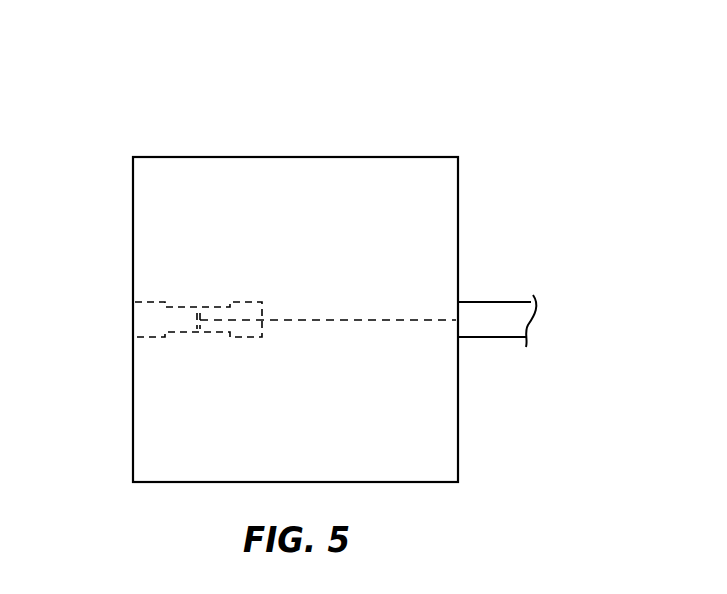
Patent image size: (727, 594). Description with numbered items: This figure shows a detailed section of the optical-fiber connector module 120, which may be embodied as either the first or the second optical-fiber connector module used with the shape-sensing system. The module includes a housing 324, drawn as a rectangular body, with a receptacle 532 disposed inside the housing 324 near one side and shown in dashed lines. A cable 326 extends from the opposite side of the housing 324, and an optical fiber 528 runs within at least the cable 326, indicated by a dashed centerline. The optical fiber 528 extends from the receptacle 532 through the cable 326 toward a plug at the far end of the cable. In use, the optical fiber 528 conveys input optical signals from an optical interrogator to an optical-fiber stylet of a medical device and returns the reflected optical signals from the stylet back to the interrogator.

The optical-fiber connector module 120 is at (503, 150).
The housing 324 is at (178, 156).
The cable 326 is at (497, 302).
The optical fiber 528 is at (322, 320).
The receptacle 532 is at (157, 282).